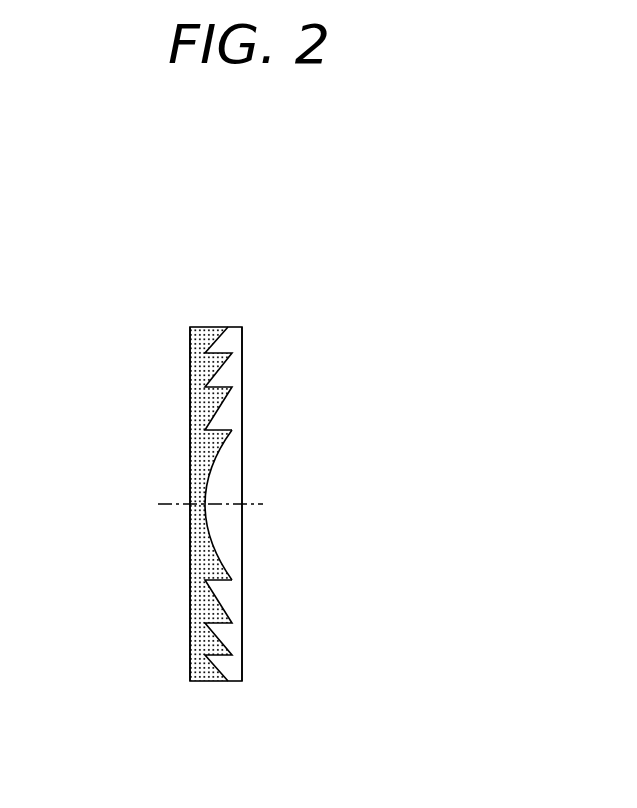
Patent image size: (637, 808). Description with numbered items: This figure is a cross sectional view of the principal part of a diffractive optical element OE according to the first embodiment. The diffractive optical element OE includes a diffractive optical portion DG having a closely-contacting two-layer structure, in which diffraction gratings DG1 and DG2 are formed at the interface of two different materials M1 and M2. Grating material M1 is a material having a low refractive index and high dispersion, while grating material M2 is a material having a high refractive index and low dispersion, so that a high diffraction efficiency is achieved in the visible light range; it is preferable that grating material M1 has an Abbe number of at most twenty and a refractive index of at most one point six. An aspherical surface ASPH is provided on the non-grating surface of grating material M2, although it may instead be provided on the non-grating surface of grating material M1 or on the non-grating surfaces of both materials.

The diffractive optical element OE is at (298, 192).
The diffractive optical portion DG is at (246, 437).
The diffraction grating DG1 is at (210, 327).
The diffraction grating DG2 is at (238, 327).
The aspherical surface ASPH is at (243, 423).
The grating material M1 is at (197, 608).
The grating material M2 is at (232, 597).